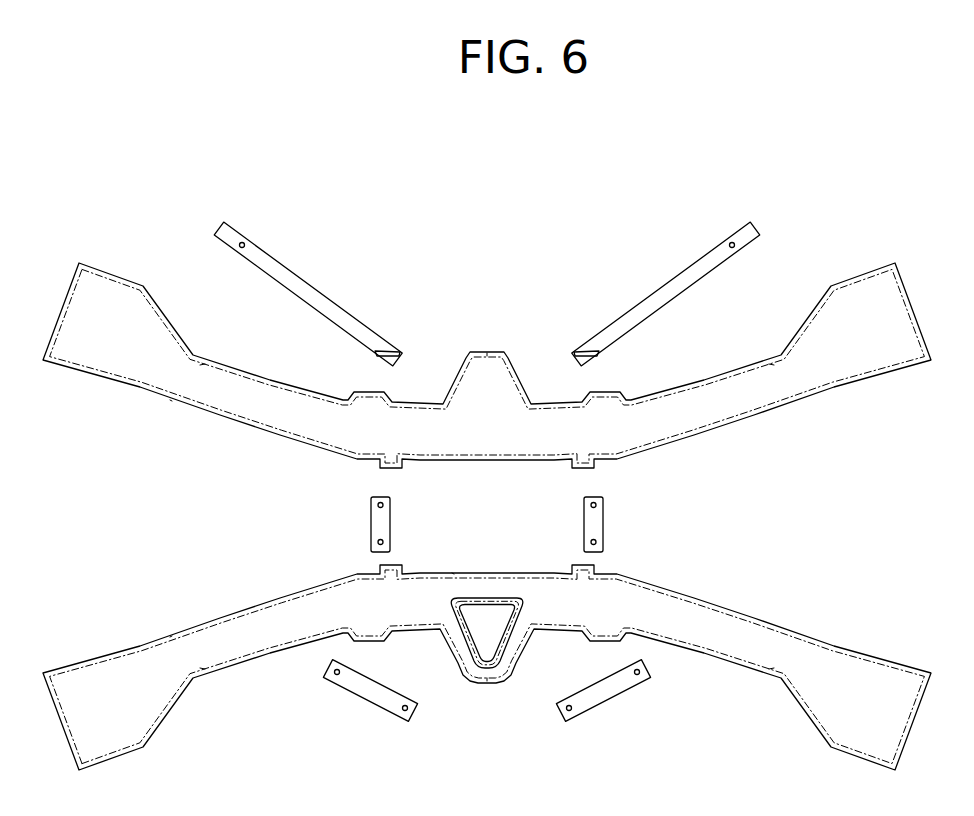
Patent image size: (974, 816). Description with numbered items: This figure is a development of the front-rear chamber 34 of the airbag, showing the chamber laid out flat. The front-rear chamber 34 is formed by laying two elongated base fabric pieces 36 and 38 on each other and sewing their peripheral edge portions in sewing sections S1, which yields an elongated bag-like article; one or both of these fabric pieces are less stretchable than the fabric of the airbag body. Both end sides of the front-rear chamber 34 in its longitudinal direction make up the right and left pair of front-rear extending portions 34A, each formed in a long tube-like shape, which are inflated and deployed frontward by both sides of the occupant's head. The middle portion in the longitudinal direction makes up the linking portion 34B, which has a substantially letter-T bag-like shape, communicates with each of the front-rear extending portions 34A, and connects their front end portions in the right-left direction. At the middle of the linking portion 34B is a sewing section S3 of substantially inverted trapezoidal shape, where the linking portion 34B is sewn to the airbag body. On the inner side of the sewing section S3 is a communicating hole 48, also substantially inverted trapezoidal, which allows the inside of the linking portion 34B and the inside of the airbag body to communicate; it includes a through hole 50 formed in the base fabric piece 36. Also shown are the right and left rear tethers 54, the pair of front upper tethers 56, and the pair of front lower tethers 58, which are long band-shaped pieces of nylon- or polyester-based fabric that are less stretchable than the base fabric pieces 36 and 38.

The front-rear chamber 34 is at (487, 516).
The base fabric piece 38 is at (812, 398).
The base fabric piece 36 is at (792, 627).
The front-rear extending portions 34A is at (258, 372).
The linking portion 34B is at (490, 347).
The communicating hole 48 is at (499, 579).
The through hole 50 is at (502, 612).
The rear tethers 54 is at (330, 293).
The front upper tethers 56 is at (370, 522).
The front lower tethers 58 is at (363, 700).
The sewing sections S1 is at (170, 400).
The sewing section S3 is at (452, 573).